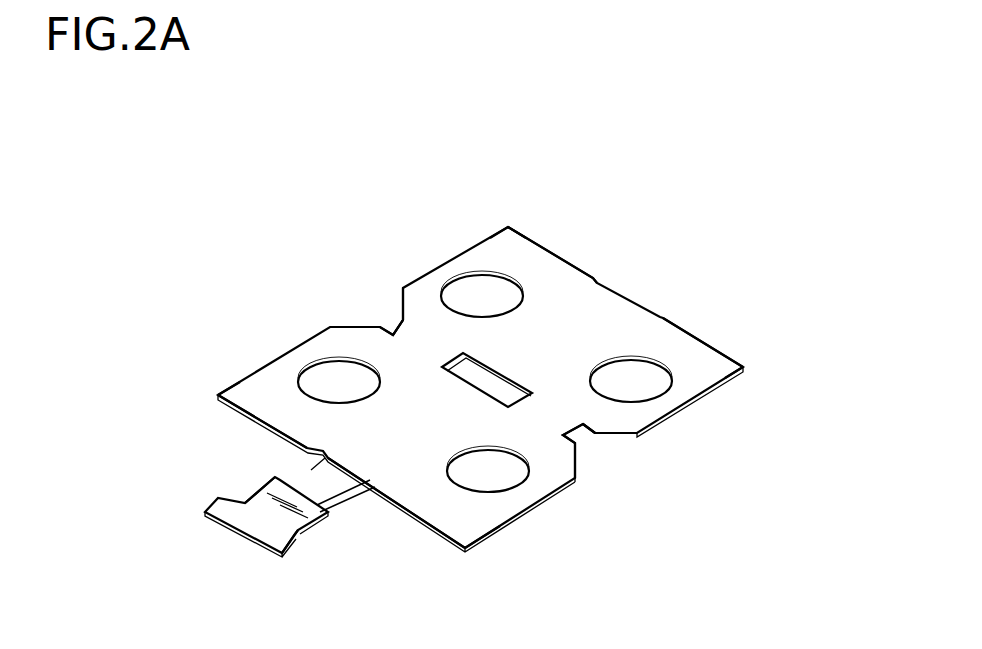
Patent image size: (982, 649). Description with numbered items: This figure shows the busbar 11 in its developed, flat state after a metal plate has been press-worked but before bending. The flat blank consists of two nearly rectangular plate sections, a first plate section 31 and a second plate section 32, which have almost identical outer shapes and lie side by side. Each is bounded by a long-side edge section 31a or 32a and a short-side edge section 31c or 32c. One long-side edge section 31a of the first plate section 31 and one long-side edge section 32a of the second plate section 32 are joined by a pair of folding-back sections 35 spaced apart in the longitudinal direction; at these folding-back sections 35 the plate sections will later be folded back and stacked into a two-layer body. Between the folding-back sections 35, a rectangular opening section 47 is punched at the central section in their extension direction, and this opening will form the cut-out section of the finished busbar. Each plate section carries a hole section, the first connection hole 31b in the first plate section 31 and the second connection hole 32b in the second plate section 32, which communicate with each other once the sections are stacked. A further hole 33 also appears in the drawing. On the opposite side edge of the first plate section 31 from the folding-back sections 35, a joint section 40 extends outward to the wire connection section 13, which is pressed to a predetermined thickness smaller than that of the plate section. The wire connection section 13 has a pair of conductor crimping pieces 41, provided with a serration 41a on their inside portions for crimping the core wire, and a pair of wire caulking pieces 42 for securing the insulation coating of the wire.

The busbar 11 is at (294, 200).
The wire connection section 13 is at (257, 563).
The first plate section 31 is at (264, 410).
The long-side edge section 31a is at (582, 443).
The hole section 31b is at (338, 380).
The short-side edge section 31c is at (234, 384).
The second plate section 32 is at (553, 262).
The long-side edge section 32a is at (400, 320).
The hole section 32b is at (640, 380).
The short-side edge section 32c is at (502, 228).
The through hole 33 is at (486, 286).
The folding-back section 35 is at (428, 338).
The joint section 40 is at (348, 482).
The conductor crimping piece 41 is at (306, 530).
The serration 41a is at (258, 527).
The wire caulking piece 42 is at (205, 505).
The rectangular opening section 47 is at (497, 392).